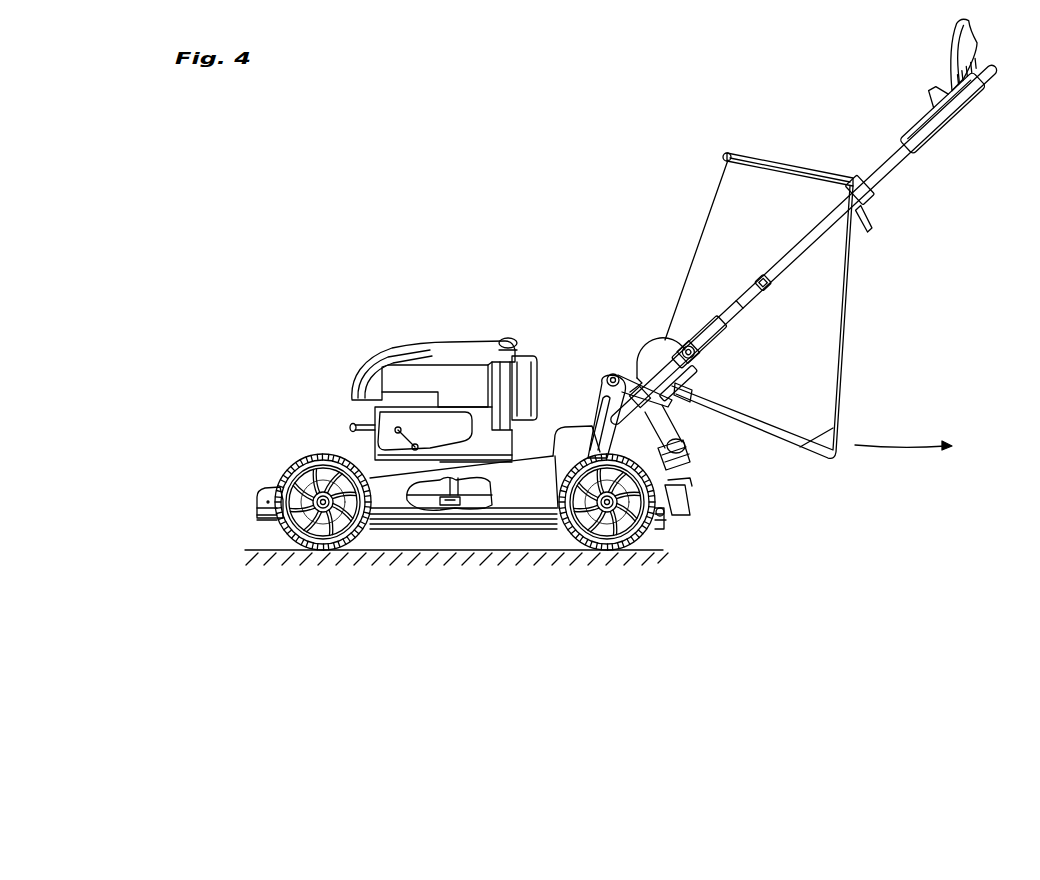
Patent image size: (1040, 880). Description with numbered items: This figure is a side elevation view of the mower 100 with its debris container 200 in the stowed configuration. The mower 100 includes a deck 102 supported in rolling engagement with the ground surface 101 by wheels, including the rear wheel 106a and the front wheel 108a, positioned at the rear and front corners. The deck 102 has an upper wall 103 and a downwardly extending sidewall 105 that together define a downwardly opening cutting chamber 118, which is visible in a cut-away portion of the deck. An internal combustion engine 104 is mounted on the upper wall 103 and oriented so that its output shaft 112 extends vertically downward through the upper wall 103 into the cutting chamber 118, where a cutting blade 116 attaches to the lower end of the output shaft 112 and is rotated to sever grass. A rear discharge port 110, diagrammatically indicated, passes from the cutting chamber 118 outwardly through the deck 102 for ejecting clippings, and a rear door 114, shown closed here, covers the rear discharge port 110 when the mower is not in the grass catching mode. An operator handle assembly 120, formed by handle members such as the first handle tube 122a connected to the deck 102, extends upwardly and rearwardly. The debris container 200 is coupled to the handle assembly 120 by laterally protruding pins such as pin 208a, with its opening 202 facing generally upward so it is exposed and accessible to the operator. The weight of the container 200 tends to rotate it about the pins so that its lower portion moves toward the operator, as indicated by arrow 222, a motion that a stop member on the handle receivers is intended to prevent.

The mower 100 is at (453, 283).
The ground surface 101 is at (264, 550).
The deck 102 is at (388, 532).
The upper wall 103 is at (375, 472).
The internal combustion engine 104 is at (470, 343).
The sidewall 105 is at (688, 486).
The rear wheel 106a is at (634, 552).
The front wheel 108a is at (292, 462).
The rear discharge port 110 is at (627, 447).
The output shaft 112 is at (468, 484).
The rear door 114 is at (650, 438).
The cutting blade 116 is at (437, 500).
The cutting chamber 118 is at (477, 504).
The operator handle assembly 120 is at (885, 144).
The first handle tube 122a is at (745, 287).
The debris container 200 is at (852, 325).
The opening 202 is at (747, 150).
The first pin 208a is at (853, 168).
The arrow 222 is at (897, 450).